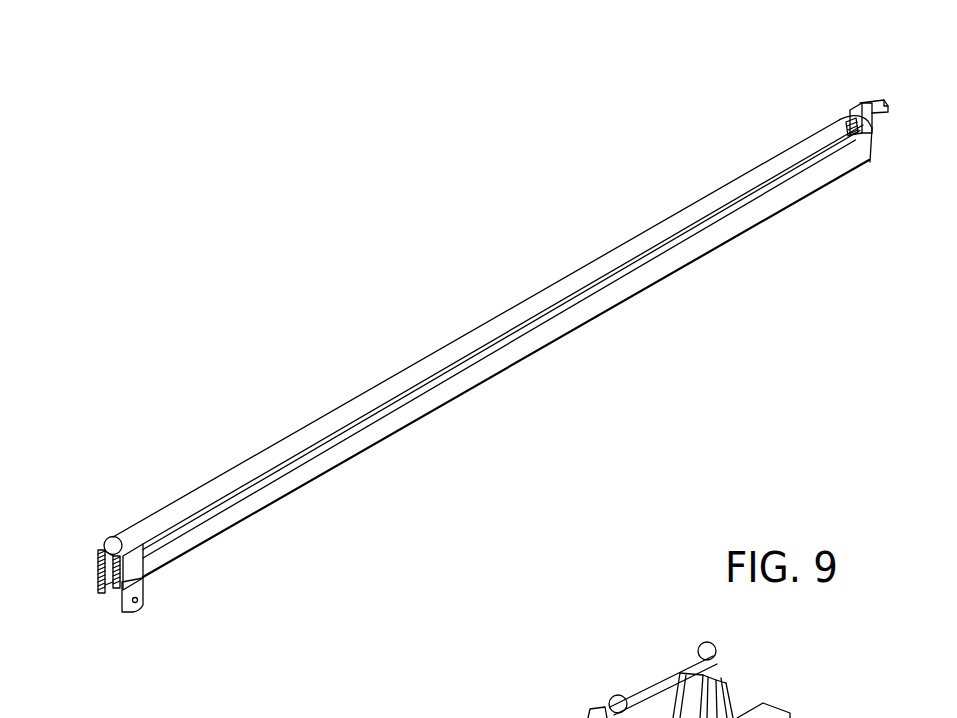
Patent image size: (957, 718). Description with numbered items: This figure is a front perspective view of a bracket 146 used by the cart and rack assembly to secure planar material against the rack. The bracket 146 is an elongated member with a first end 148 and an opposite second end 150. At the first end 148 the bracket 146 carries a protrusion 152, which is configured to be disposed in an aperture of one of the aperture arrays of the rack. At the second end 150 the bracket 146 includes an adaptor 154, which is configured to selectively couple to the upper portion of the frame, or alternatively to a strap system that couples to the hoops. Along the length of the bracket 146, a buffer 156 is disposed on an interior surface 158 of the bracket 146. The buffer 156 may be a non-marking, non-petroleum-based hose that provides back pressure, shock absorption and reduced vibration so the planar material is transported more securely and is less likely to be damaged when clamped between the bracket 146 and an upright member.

The bracket 146 is at (258, 291).
The first end 148 is at (852, 107).
The second end 150 is at (99, 553).
The protrusion 152 is at (871, 102).
The adaptor 154 is at (138, 612).
The buffer 156 is at (458, 338).
The interior surface 158 is at (527, 330).